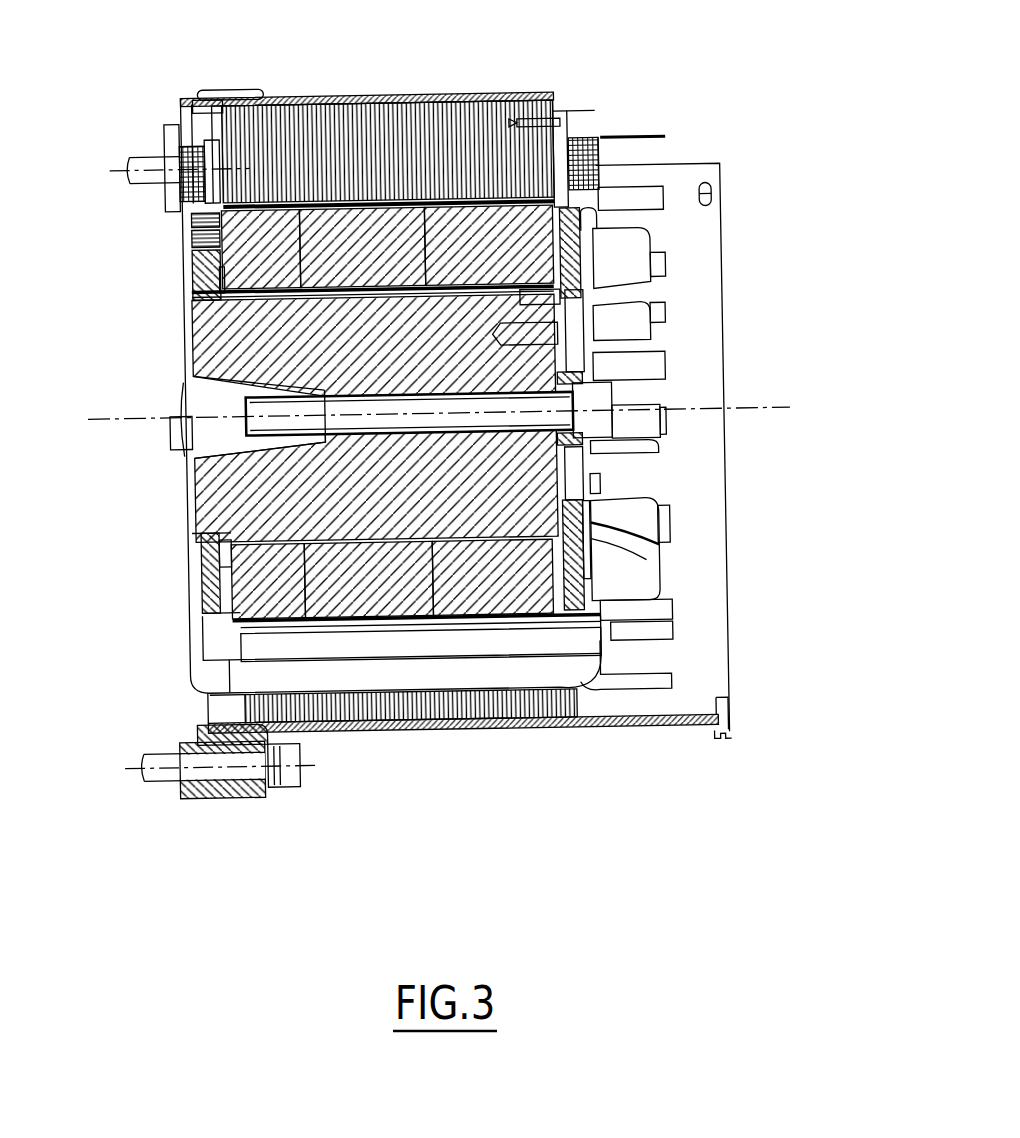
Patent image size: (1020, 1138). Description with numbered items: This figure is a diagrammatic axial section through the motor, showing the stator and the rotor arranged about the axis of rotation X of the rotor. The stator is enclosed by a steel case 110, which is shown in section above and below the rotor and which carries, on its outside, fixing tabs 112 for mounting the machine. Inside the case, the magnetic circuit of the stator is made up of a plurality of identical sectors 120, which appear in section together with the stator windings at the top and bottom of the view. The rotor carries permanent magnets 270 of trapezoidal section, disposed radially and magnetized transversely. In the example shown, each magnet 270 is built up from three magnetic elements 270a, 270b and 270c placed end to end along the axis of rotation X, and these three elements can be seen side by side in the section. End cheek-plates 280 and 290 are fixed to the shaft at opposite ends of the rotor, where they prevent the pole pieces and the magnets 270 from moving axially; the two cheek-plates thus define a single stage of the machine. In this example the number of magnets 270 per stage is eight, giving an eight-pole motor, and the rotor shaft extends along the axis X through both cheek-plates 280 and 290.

The steel case 110 is at (614, 728).
The fixing tabs 112 is at (210, 800).
The sectors 120 is at (372, 130).
The permanent magnets 270 is at (216, 238).
The magnetic element 270a is at (208, 248).
The magnetic element 270b is at (330, 230).
The magnetic element 270c is at (468, 225).
The end cheek-plate 280 is at (215, 620).
The end cheek-plate 290 is at (597, 556).
The axis of rotation X is at (705, 404).